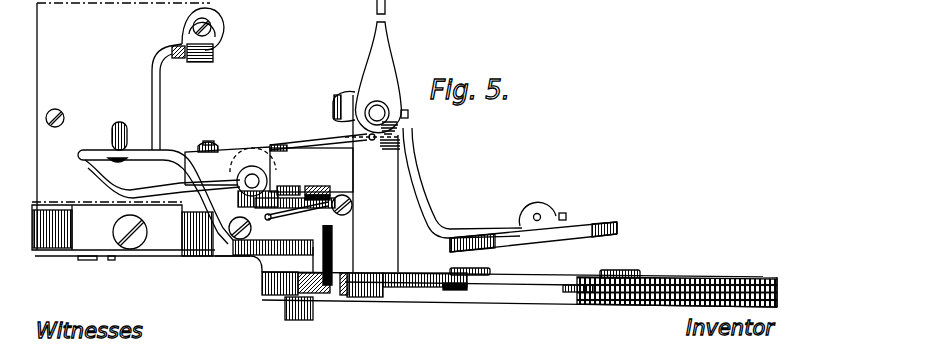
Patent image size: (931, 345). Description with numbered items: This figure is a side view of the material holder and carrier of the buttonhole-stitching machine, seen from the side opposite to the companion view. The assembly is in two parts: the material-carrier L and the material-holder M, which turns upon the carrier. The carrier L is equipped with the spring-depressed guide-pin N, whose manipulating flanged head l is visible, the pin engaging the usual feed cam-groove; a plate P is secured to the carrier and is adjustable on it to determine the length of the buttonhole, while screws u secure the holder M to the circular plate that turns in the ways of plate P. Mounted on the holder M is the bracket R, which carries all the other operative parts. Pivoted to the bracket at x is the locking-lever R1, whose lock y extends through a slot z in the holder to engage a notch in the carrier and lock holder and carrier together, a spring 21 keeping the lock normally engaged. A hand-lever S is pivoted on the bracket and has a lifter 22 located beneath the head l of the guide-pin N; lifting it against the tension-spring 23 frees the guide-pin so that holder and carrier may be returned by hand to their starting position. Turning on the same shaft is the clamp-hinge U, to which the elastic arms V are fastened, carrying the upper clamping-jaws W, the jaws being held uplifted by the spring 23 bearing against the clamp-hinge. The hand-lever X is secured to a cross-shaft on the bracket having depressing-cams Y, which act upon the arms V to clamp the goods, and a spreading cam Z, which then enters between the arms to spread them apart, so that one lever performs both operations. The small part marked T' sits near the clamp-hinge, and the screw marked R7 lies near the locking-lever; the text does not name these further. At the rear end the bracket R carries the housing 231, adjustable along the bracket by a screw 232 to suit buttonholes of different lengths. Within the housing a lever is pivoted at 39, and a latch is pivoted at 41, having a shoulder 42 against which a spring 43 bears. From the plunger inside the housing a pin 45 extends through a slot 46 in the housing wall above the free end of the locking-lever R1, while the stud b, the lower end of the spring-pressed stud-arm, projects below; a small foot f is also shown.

The latch pivot 41 is at (193, 33).
The shoulder 42 is at (206, 61).
The spring 43 is at (178, 59).
The slot 46 is at (155, 97).
The lever pivot 39 is at (58, 110).
The housing 231 is at (103, 73).
The pin 45 is at (112, 140).
The locking-lever R1 is at (158, 151).
The hand-lever S is at (138, 178).
The lever plate T' is at (231, 177).
The clamp-hinge U is at (228, 149).
The elastic arms V is at (285, 145).
The depressing-cams Y is at (348, 140).
The spreading cam Z is at (340, 93).
The hand-lever X is at (383, 63).
The tension-spring 23 is at (287, 186).
The lifter 22 is at (312, 186).
The flanged head l is at (333, 188).
The spring 21 is at (326, 206).
The screw R7 is at (255, 226).
The bracket R is at (376, 183).
The stud b is at (90, 261).
The foot f is at (112, 261).
The screw 232 is at (137, 250).
The pivot x is at (252, 256).
The lock y is at (326, 293).
The slot z is at (346, 295).
The guide-pin N is at (287, 305).
The upper clamping-jaws W is at (594, 230).
The screws u is at (494, 270).
The material-holder M is at (698, 281).
The plate P is at (652, 290).
The material-carrier L is at (522, 296).